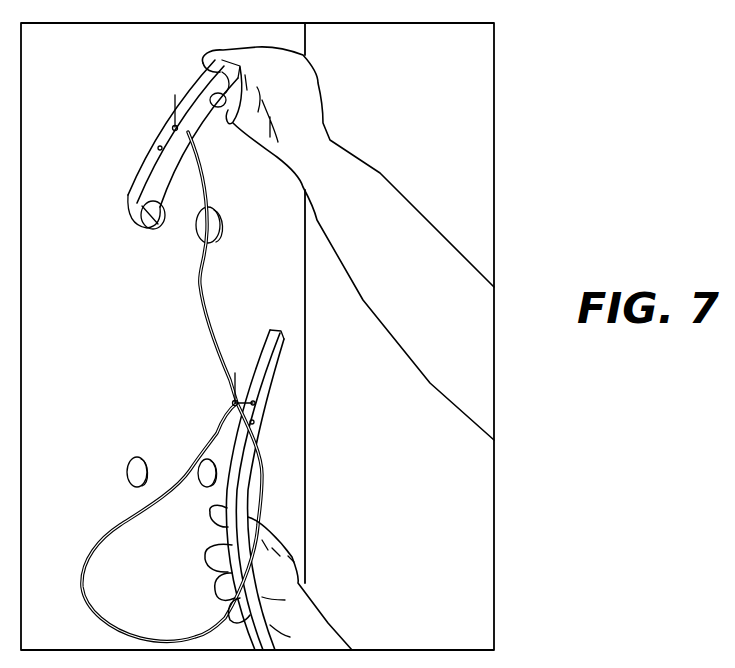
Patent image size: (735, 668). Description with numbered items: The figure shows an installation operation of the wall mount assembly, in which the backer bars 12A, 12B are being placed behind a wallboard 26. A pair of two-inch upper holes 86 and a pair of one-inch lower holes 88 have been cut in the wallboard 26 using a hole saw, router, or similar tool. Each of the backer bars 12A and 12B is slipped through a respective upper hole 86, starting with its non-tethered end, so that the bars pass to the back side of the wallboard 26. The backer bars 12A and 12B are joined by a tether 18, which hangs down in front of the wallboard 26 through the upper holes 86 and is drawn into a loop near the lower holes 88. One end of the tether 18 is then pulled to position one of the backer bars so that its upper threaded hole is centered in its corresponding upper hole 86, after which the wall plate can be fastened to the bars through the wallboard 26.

The backer bar 12A is at (197, 93).
The backer bar 12B is at (266, 373).
The tether 18 is at (210, 310).
The wallboard 26 is at (88, 318).
The upper holes 86 is at (162, 232).
The lower holes 88 is at (130, 458).